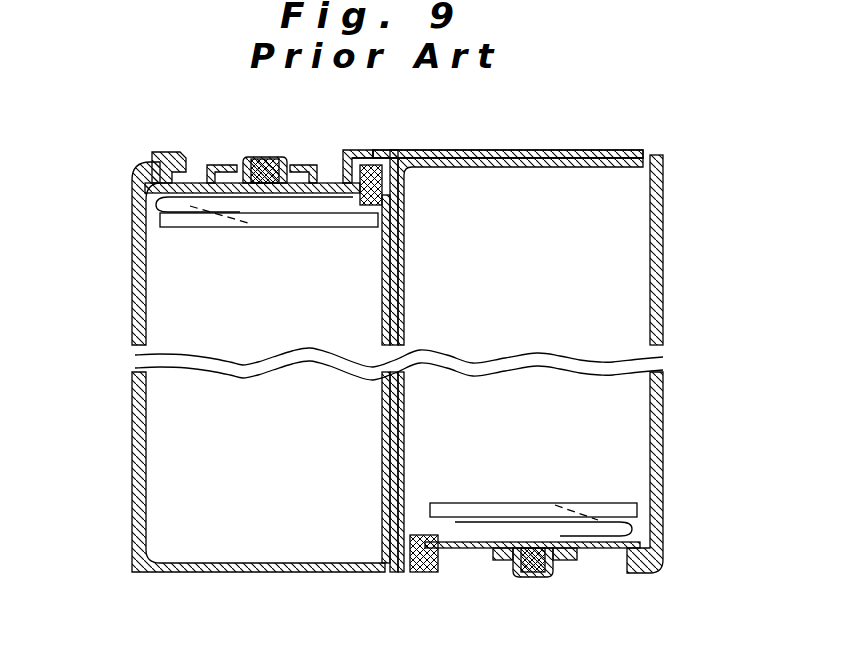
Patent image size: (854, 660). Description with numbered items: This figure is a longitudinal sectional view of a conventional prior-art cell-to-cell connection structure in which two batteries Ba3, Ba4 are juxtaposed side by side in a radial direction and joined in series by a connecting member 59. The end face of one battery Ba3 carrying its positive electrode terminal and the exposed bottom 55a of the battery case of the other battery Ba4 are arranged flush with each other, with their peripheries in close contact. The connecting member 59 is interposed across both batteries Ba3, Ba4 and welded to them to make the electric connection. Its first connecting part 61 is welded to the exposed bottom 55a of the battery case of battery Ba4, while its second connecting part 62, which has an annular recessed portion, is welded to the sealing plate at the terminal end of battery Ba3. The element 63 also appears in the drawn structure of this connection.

The exposed bottom of battery case 55a is at (548, 150).
The connecting member 59 is at (378, 146).
The first connecting part 61 is at (498, 150).
The second connecting part 62 is at (168, 152).
The projection of cap 63 is at (345, 150).
The battery Ba3 is at (217, 330).
The battery Ba4 is at (548, 362).